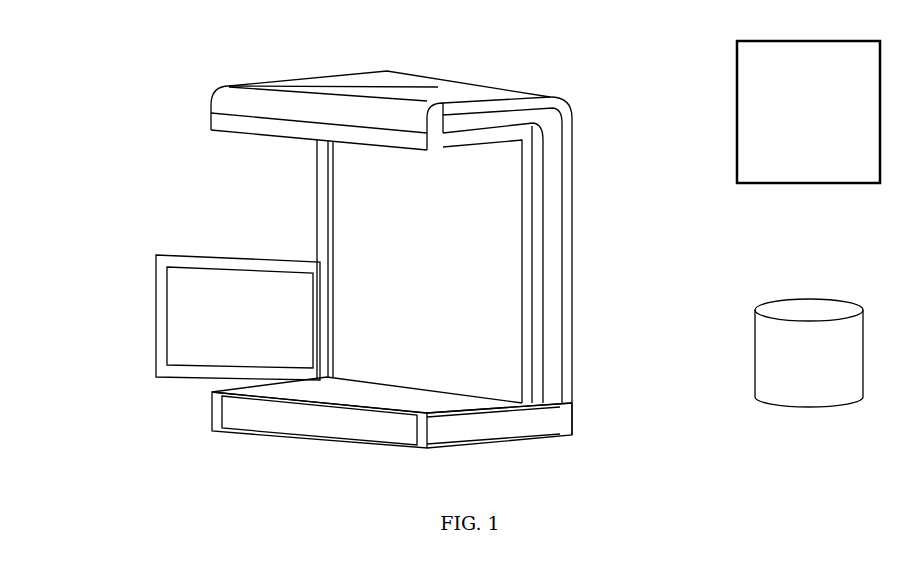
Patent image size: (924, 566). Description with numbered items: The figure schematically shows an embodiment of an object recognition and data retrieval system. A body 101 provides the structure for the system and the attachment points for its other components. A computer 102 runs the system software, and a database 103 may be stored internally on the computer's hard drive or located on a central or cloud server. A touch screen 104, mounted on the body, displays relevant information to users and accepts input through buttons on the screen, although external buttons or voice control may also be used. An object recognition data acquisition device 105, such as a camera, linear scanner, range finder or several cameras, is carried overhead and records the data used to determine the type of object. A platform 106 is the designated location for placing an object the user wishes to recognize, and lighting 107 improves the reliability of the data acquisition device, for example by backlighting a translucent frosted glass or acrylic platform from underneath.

The body 101 is at (567, 288).
The computer 102 is at (737, 108).
The database 103 is at (808, 297).
The touch screen 104 is at (177, 322).
The object recognition data acquisition device 105 is at (350, 152).
The platform 106 is at (362, 393).
The lighting 107 is at (333, 420).